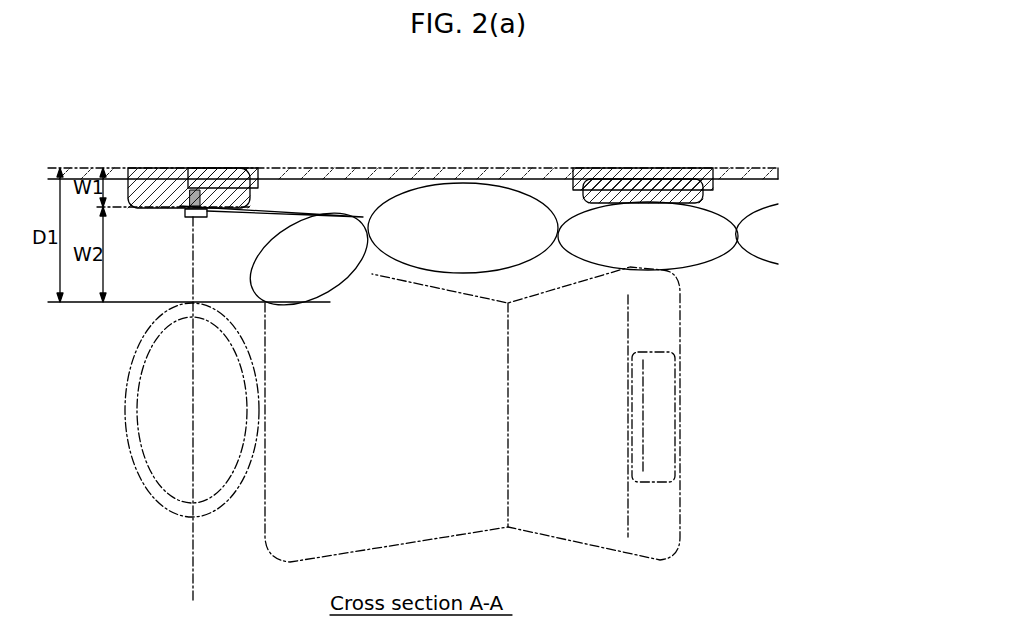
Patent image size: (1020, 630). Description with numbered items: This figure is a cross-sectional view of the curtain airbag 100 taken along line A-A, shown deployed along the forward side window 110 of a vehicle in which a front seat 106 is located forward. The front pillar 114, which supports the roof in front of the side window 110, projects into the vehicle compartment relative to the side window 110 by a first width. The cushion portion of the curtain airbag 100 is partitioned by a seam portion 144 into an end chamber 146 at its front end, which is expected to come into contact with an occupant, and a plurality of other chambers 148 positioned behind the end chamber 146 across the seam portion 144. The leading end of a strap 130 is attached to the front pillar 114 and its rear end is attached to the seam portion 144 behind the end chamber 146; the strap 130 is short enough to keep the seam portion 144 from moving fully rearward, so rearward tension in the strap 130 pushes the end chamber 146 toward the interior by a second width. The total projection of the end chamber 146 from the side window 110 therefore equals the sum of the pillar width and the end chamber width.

The curtain airbag 100 is at (725, 287).
The front seat 106 is at (677, 507).
The side window 110 is at (520, 167).
The front pillar 114 is at (173, 168).
The strap 130 is at (257, 211).
The seam portion 144 is at (362, 217).
The end chamber 146 is at (318, 300).
The other chambers 148 is at (455, 258).